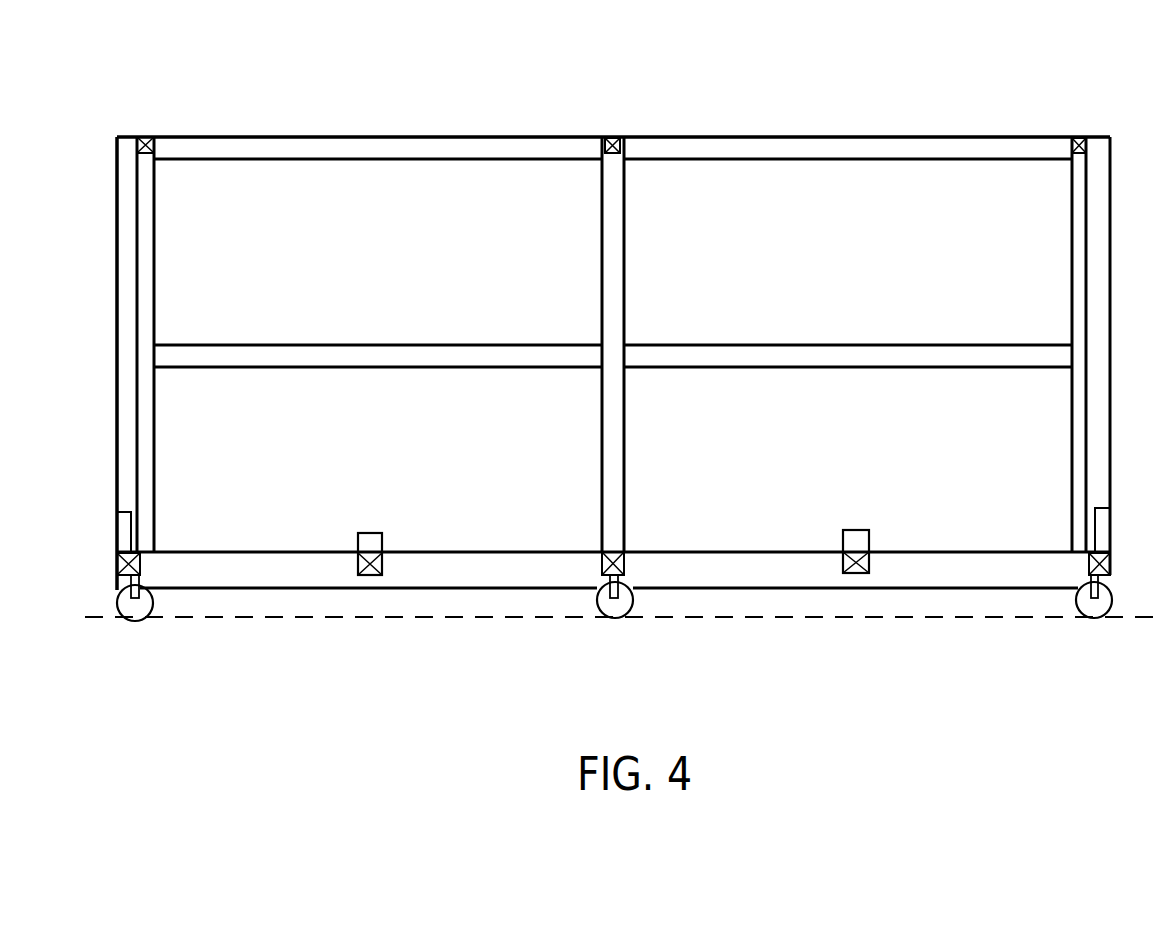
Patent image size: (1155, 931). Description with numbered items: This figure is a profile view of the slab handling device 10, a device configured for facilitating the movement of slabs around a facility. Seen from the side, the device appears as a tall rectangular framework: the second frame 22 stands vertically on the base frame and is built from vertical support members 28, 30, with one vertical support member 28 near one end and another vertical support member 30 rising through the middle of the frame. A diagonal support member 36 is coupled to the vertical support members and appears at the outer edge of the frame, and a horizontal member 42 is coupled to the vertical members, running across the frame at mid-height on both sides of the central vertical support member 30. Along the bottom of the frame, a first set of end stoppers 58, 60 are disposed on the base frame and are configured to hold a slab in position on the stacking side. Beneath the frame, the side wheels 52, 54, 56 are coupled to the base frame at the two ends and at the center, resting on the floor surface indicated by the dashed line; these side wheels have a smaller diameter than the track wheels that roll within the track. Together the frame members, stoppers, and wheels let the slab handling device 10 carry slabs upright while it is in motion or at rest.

The slab handling device 10 is at (1027, 110).
The second frame 22 is at (393, 130).
The vertical support member 28 is at (146, 238).
The vertical support member 30 is at (616, 225).
The diagonal support member 36 is at (129, 150).
The horizontal member 42 is at (340, 361).
The side wheel 52 is at (145, 608).
The side wheel 54 is at (615, 610).
The side wheel 56 is at (1100, 607).
The end stopper 58 is at (370, 534).
The end stopper 60 is at (853, 533).